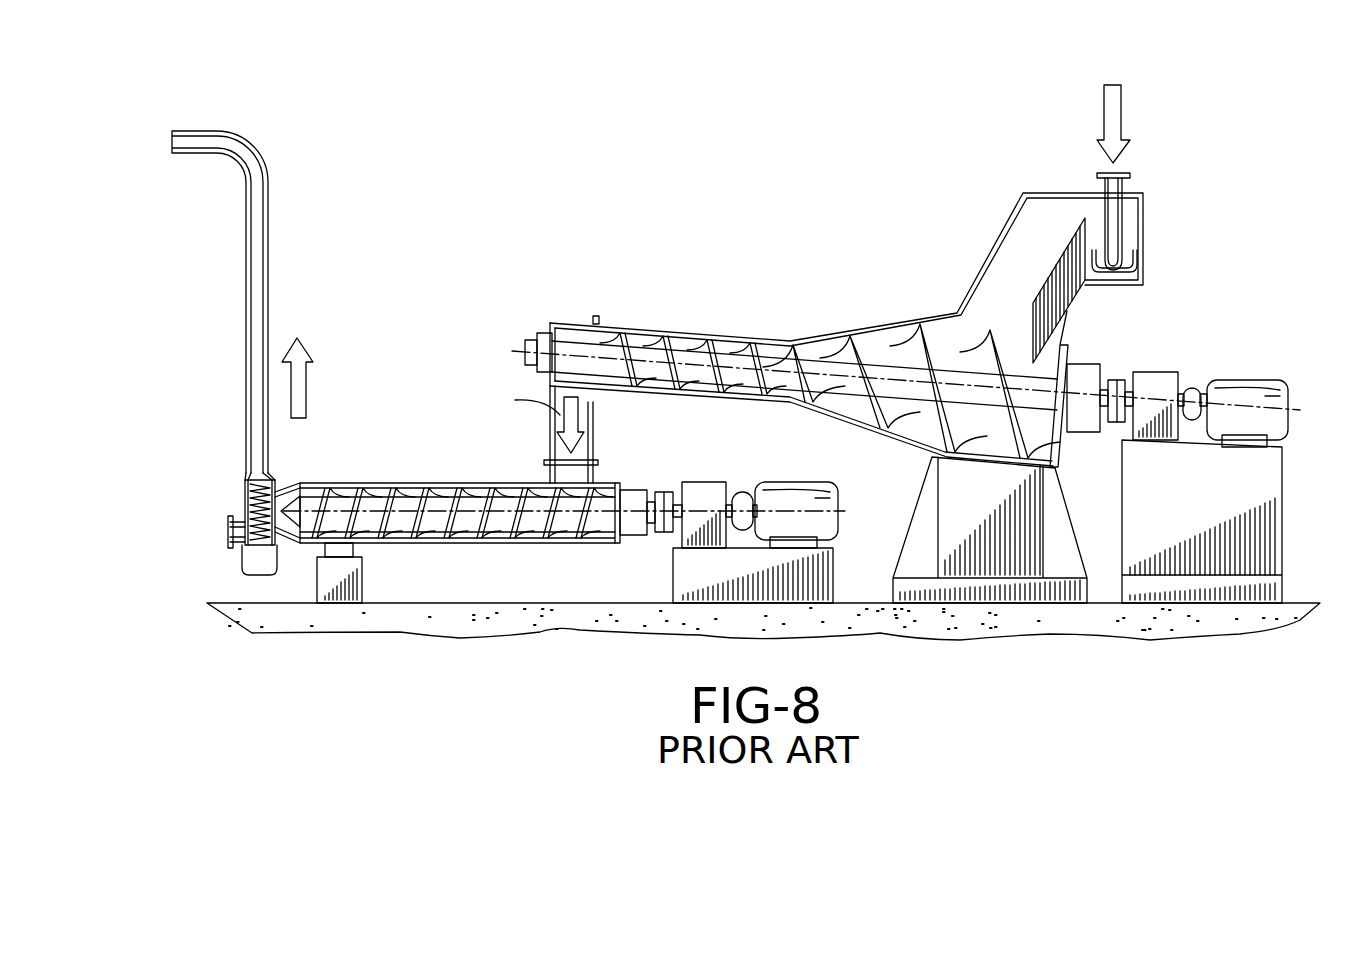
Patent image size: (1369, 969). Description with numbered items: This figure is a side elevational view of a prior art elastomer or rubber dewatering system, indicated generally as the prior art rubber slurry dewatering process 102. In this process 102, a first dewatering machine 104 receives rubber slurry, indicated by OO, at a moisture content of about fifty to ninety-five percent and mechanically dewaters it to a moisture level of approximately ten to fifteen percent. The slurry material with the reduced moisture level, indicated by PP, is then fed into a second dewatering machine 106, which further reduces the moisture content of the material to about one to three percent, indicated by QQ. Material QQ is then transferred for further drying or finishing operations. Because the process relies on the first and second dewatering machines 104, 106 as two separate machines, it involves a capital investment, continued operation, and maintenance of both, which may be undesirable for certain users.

The prior art rubber slurry dewatering process 102 is at (592, 112).
The first dewatering machine 104 is at (694, 333).
The second dewatering machine 106 is at (398, 486).